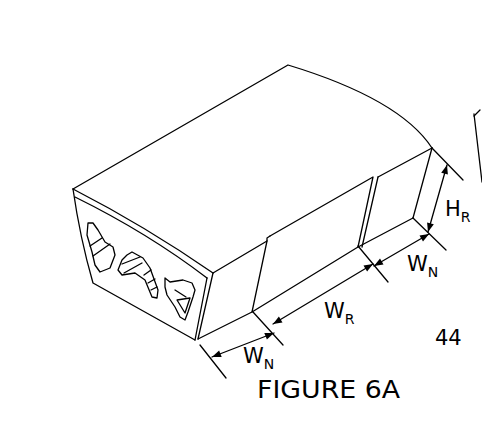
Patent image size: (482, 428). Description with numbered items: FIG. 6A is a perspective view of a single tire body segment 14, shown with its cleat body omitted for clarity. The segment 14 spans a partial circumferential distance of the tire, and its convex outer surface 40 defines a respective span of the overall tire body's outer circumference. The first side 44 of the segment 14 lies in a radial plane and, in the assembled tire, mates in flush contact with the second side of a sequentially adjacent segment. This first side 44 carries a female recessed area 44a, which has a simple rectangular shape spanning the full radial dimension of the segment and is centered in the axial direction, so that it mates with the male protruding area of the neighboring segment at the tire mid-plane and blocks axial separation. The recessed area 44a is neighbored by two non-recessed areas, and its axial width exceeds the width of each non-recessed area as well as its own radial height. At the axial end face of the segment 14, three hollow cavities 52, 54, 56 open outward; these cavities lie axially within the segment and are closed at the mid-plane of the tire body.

The tire body segment 14 is at (239, 206).
The convex outer surface 40 is at (242, 128).
The first side 44 is at (234, 279).
The female recessed area 44a is at (319, 232).
The cavity 52 is at (89, 265).
The cavity 54 is at (138, 278).
The cavity 56 is at (177, 303).